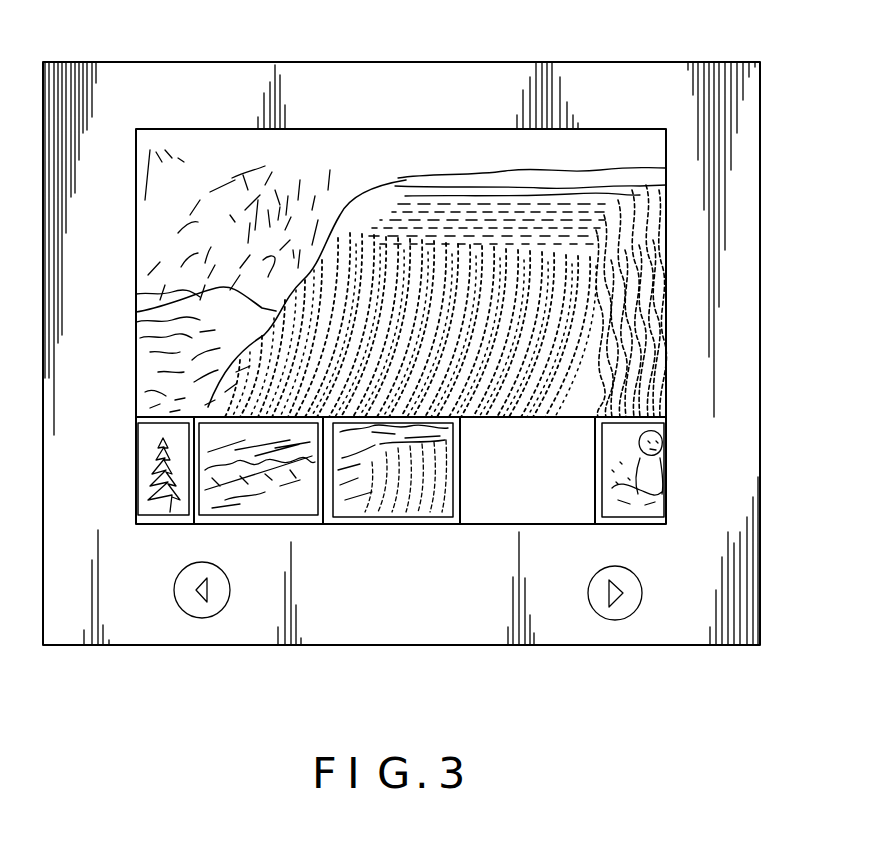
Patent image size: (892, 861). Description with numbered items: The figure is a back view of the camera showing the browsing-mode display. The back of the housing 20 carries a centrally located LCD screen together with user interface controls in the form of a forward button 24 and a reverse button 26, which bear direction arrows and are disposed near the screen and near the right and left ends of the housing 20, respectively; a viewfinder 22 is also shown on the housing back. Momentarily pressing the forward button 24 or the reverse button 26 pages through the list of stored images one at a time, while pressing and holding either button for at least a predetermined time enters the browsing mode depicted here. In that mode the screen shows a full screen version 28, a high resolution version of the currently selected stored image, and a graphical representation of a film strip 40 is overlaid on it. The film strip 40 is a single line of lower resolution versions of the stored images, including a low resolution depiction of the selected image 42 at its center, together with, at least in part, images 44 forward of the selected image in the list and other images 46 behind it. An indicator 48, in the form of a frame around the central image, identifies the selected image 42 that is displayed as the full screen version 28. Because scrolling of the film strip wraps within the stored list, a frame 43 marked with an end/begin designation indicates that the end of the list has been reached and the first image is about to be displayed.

The housing 20 is at (452, 97).
The viewfinder 22 is at (666, 215).
The forward button 24 is at (627, 607).
The reverse button 26 is at (207, 607).
The full screen version 28 is at (136, 312).
The film strip 40 is at (634, 418).
The selected image 42 is at (378, 497).
The frame 43 is at (560, 505).
The images forward of the selected image 44 is at (640, 493).
The images behind the selected image 46 is at (225, 495).
The indicator 48 is at (432, 518).